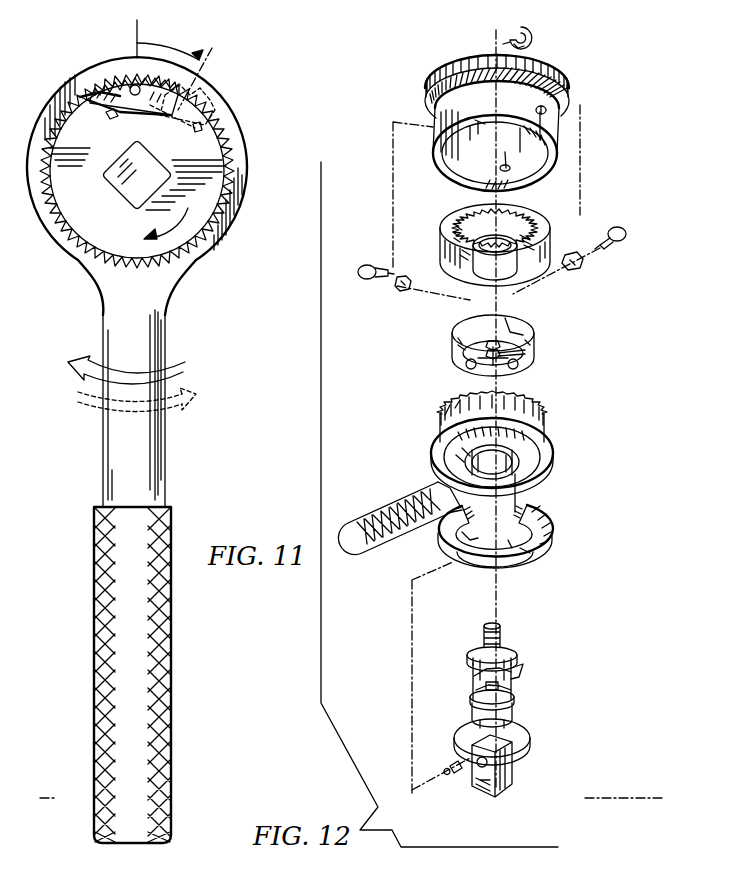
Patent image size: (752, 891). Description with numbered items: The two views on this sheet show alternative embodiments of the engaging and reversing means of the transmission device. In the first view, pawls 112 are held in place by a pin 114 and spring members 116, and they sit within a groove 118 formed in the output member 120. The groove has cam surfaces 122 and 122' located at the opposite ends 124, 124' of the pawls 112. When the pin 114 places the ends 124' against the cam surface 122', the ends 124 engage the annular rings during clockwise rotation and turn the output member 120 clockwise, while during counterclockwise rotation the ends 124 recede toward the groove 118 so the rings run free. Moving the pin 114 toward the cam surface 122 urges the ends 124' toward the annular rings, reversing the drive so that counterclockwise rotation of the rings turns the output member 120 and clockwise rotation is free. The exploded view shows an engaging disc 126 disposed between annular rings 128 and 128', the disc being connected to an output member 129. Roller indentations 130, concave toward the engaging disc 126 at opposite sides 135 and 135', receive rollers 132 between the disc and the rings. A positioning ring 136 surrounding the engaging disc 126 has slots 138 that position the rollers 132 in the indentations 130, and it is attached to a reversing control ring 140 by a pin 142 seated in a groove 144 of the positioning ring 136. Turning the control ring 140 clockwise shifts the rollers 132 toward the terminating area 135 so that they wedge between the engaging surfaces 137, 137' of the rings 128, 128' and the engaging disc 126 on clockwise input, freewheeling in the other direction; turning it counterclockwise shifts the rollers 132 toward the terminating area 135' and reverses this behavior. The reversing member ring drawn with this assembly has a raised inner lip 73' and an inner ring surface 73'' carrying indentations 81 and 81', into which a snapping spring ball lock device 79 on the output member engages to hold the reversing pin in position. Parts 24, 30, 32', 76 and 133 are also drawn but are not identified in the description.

In FIG. 11, the pawls 112 is at (133, 87).
In FIG. 11, the pin 114 is at (160, 85).
In FIG. 11, the spring members 116 is at (141, 100).
In FIG. 11, the groove 118 is at (108, 117).
In FIG. 11, the output member 120 is at (76, 238).
In FIG. 11, the cam surface 122 is at (86, 72).
In FIG. 11, the ends of the pawls 124 is at (124, 76).
In FIG. 11, the ends of the pawls 124' is at (211, 103).
In FIG. 11, the cam surface 122' is at (214, 120).
In FIG. 12, the screw 24 is at (402, 276).
In FIG. 12, the cover cap 30 is at (432, 160).
In FIG. 12, the hole 32' is at (553, 149).
In FIG. 12, the square drive member 76 is at (512, 778).
In FIG. 12, the snapping spring ball lock device 79 is at (452, 776).
In FIG. 12, the indentation 81 is at (400, 521).
In FIG. 12, the indentation 81' is at (478, 530).
In FIG. 12, the raised inner lip 73' is at (510, 535).
In FIG. 12, the inner ring surface 73'' is at (552, 563).
In FIG. 12, the engaging disc 126 is at (486, 688).
In FIG. 12, the annular ring 128 is at (515, 443).
In FIG. 12, the annular ring 128' is at (503, 244).
In FIG. 12, the output member 129 is at (462, 710).
In FIG. 12, the roller indentations 130 is at (473, 670).
In FIG. 12, the rollers 132 is at (530, 328).
In FIG. 12, the spacer disc 133 is at (515, 700).
In FIG. 12, the terminating area 135 is at (475, 650).
In FIG. 12, the terminating area 135' is at (535, 685).
In FIG. 12, the positioning ring 136 is at (527, 350).
In FIG. 12, the engaging surface 137 is at (440, 403).
In FIG. 12, the engaging surface 137' is at (431, 233).
In FIG. 12, the slots 138 is at (486, 357).
In FIG. 12, the reversing control ring 140 is at (553, 537).
In FIG. 12, the pin 142 is at (515, 512).
In FIG. 12, the groove 144 is at (503, 324).